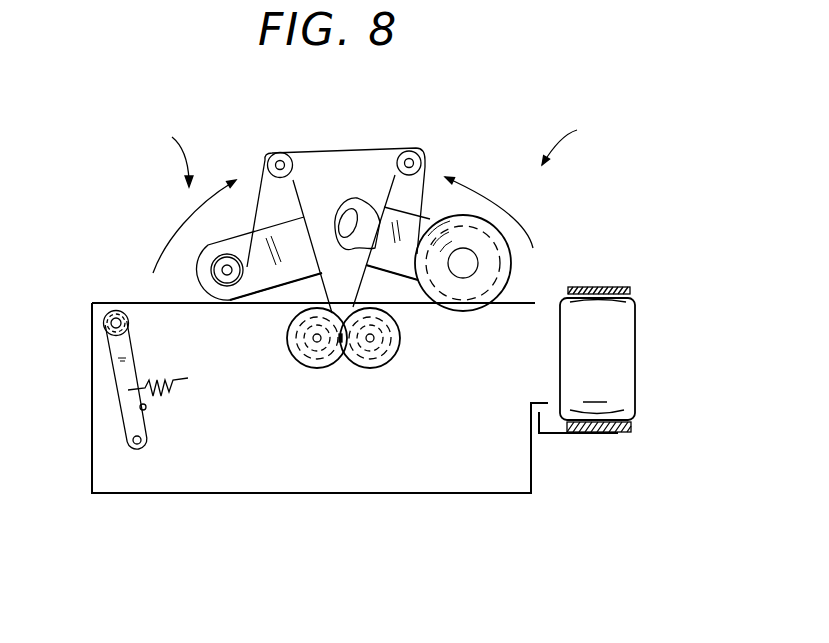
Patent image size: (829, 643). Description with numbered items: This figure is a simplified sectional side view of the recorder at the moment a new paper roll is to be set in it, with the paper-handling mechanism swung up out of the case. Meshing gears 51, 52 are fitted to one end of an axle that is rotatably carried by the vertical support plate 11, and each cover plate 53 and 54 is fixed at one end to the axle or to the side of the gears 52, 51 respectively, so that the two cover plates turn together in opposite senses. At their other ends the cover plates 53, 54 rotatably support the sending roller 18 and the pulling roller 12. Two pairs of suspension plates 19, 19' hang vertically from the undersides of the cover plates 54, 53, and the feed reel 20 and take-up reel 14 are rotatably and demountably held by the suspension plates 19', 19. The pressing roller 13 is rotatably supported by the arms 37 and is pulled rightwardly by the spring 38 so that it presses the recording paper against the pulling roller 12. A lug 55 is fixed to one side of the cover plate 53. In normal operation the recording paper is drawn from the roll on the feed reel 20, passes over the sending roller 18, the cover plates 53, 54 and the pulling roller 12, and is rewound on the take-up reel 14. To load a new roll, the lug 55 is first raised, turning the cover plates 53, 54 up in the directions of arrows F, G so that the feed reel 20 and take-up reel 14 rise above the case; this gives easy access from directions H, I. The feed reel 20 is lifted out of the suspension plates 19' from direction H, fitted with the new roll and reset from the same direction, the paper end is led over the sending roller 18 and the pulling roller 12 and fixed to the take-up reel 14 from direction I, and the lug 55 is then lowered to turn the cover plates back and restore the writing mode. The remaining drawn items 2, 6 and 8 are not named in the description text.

The lid 2 is at (606, 290).
The frame 6 is at (347, 148).
The container 8 is at (620, 358).
The vertical support plate 11 is at (322, 482).
The pulling roller 12 is at (301, 128).
The pressing roller 13 is at (104, 323).
The take-up reel 14 is at (218, 270).
The sending roller 18 is at (420, 156).
The suspension plates 19 is at (259, 259).
The suspension plates 19' is at (398, 254).
The feed reel 20 is at (473, 270).
The arms 37 is at (127, 415).
The spring 38 is at (167, 387).
The meshing gear 51 is at (375, 370).
The meshing gear 52 is at (315, 370).
The cover plate 53 is at (349, 284).
The cover plate 54 is at (292, 181).
The lug 55 is at (372, 182).
The arrow F is at (503, 210).
The arrow G is at (180, 230).
The direction H is at (567, 143).
The direction I is at (177, 159).